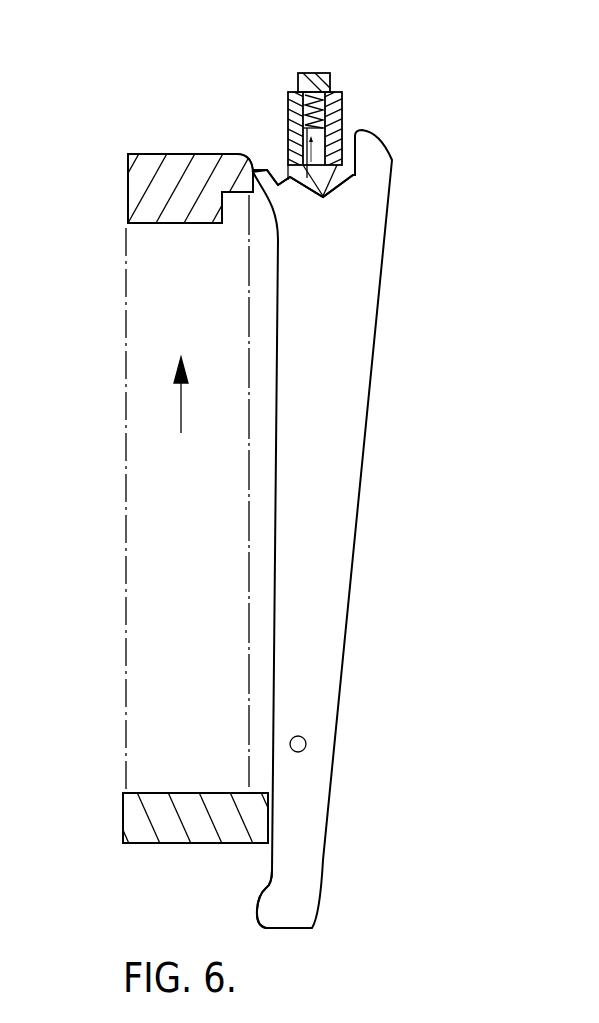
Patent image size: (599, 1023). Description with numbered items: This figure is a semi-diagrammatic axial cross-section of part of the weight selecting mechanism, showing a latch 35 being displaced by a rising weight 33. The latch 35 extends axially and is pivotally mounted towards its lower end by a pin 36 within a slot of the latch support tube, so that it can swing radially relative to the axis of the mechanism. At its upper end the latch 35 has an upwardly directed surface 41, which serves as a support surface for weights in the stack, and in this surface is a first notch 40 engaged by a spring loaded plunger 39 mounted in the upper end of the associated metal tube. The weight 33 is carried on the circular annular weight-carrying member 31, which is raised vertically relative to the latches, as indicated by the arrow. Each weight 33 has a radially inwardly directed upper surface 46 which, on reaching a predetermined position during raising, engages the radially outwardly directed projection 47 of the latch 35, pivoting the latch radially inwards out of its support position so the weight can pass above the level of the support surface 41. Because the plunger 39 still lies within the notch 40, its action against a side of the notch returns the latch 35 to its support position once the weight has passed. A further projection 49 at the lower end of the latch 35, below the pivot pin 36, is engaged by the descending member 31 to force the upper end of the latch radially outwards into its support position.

The weight-carrying member 31 is at (147, 823).
The weight 33 is at (142, 203).
The latch 35 is at (322, 399).
The pin 36 is at (304, 749).
The spring loaded plunger 39 is at (292, 96).
The first notch 40 is at (340, 195).
The upwardly directed surface 41 is at (262, 168).
The radially inwardly directed upper surface 46 is at (214, 130).
The radially outwardly directed projection 47 is at (258, 193).
The projection 49 is at (295, 929).